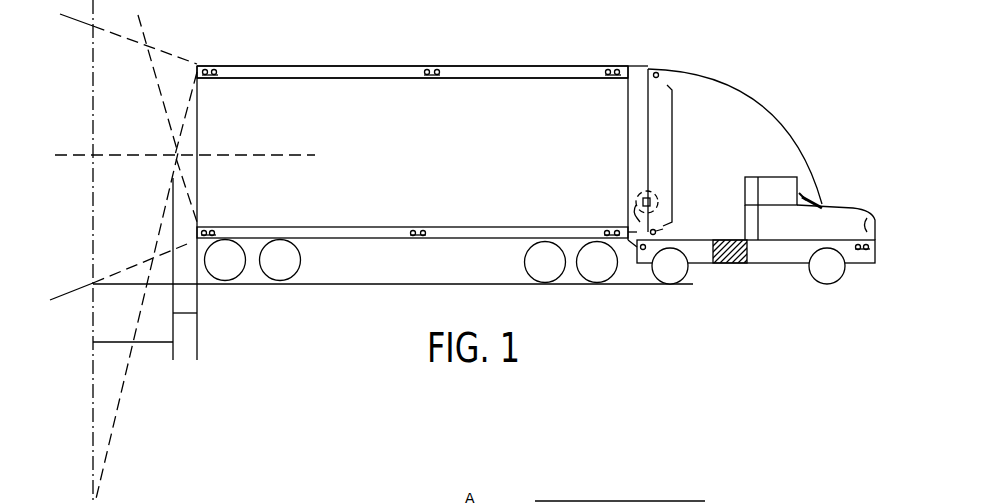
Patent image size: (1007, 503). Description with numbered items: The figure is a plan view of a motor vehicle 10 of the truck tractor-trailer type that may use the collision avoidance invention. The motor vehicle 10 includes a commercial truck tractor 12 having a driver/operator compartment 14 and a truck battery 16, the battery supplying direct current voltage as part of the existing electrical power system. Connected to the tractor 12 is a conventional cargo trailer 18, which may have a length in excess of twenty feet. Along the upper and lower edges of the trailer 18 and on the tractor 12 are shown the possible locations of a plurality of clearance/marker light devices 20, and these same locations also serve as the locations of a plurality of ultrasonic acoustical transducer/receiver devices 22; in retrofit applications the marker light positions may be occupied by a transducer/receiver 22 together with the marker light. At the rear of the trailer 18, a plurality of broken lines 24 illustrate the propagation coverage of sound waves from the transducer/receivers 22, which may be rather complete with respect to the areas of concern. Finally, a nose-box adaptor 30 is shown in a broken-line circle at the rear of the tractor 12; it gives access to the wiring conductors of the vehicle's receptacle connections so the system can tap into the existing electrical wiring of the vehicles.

The motor vehicle 10 is at (690, 50).
The commercial truck tractor 12 is at (766, 106).
The driver/operator compartment 14 is at (822, 197).
The truck battery 16 is at (735, 240).
The cargo trailer 18 is at (558, 66).
The clearance/marker light devices 20 is at (204, 70).
The ultrasonic acoustical transducer/receiver devices 22 is at (218, 78).
The broken lines 24 is at (157, 50).
The nose-box adaptor 30 is at (661, 197).